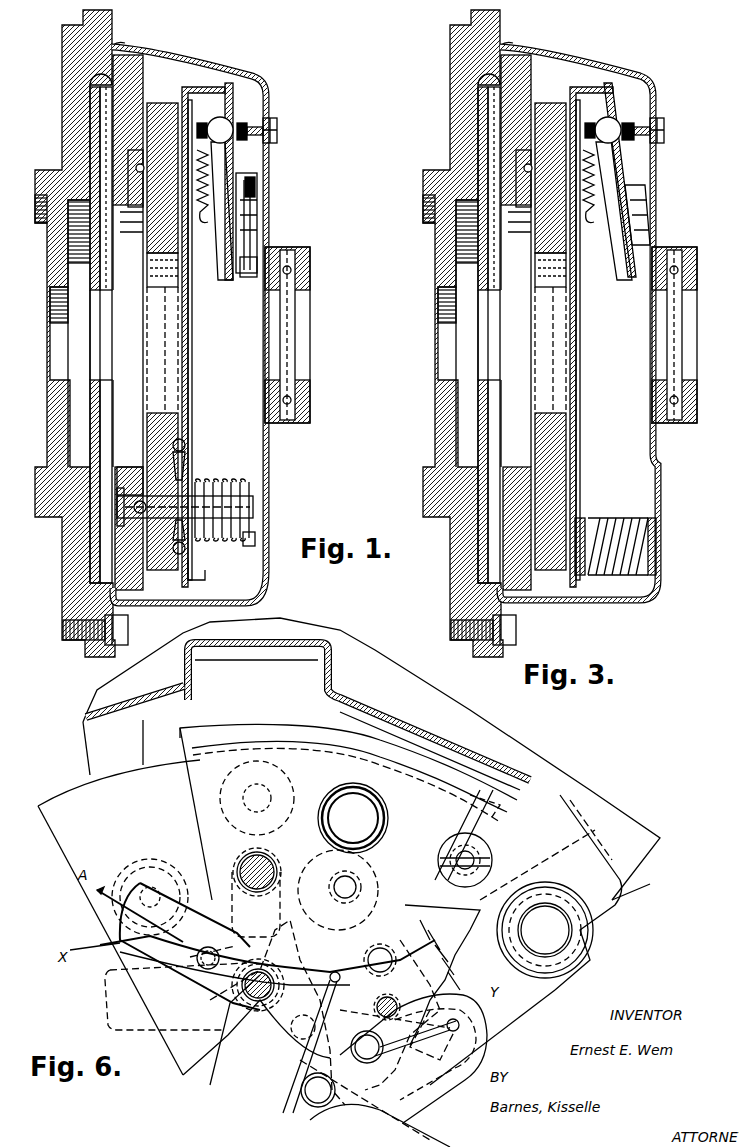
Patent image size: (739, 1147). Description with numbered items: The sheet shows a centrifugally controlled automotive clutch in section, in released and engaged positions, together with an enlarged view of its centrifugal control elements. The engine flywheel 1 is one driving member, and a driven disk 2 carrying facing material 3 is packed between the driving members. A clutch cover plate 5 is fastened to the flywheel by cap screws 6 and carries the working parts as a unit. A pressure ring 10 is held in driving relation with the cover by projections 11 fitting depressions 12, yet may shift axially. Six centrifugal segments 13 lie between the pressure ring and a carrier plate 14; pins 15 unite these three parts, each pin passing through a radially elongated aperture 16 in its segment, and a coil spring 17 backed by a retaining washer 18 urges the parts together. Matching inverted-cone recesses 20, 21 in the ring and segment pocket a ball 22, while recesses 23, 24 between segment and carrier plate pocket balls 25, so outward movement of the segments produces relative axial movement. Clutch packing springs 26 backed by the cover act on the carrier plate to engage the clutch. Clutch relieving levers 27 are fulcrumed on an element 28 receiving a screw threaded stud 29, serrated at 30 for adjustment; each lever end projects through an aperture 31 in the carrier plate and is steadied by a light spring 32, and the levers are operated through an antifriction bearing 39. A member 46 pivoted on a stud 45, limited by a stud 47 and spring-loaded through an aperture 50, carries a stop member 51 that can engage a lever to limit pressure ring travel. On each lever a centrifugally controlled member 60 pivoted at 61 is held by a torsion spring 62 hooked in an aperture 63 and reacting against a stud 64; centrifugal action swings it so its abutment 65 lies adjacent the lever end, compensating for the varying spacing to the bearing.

In FIG. 1, the flywheel 1 is at (73, 50).
In FIG. 3, the flywheel 1 is at (461, 50).
In FIG. 1, the driven disk 2 is at (100, 240).
In FIG. 3, the driven disk 2 is at (488, 240).
In FIG. 1, the facing material 3 is at (95, 106).
In FIG. 3, the facing material 3 is at (483, 106).
In FIG. 1, the clutch cover plate 5 is at (271, 596).
In FIG. 3, the clutch cover plate 5 is at (650, 598).
In FIG. 6, the clutch cover plate 5 is at (495, 740).
In FIG. 1, the cap screws 6 is at (130, 632).
In FIG. 3, the cap screws 6 is at (518, 632).
In FIG. 1, the pressure ring 10 is at (145, 75).
In FIG. 3, the pressure ring 10 is at (532, 580).
In FIG. 1, the projections 11 is at (130, 70).
In FIG. 3, the projections 11 is at (518, 70).
In FIG. 6, the projections 11 is at (305, 680).
In FIG. 6, the depressions 12 is at (303, 640).
In FIG. 1, the segments 13 is at (190, 282).
In FIG. 3, the segments 13 is at (570, 420).
In FIG. 1, the carrier plate 14 is at (196, 428).
In FIG. 3, the carrier plate 14 is at (582, 445).
In FIG. 6, the carrier plate 14 is at (608, 896).
In FIG. 1, the pins 15 is at (163, 503).
In FIG. 6, the pins 15 is at (280, 868).
In FIG. 1, the aperture 16 is at (148, 480).
In FIG. 6, the aperture 16 is at (276, 908).
In FIG. 1, the coil spring 17 is at (222, 483).
In FIG. 1, the retaining washer 18 is at (248, 547).
In FIG. 1, the recess 20 is at (136, 208).
In FIG. 3, the recess 20 is at (524, 208).
In FIG. 1, the recess 21 is at (160, 118).
In FIG. 3, the recess 21 is at (548, 118).
In FIG. 1, the ball 22 is at (150, 262).
In FIG. 3, the ball 22 is at (538, 262).
In FIG. 1, the recess 23 is at (196, 440).
In FIG. 1, the recess 24 is at (190, 412).
In FIG. 1, the balls 25 is at (197, 456).
In FIG. 3, the clutch packing springs 26 is at (605, 520).
In FIG. 6, the clutch packing springs 26 is at (588, 965).
In FIG. 1, the clutch relieving levers 27 is at (237, 175).
In FIG. 3, the clutch relieving levers 27 is at (625, 175).
In FIG. 1, the fulcrum element 28 is at (225, 120).
In FIG. 3, the fulcrum element 28 is at (615, 120).
In FIG. 1, the screw threaded stud 29 is at (278, 128).
In FIG. 3, the screw threaded stud 29 is at (665, 128).
In FIG. 6, the screw threaded stud 29 is at (485, 845).
In FIG. 1, the serrations 30 is at (257, 126).
In FIG. 3, the serrations 30 is at (645, 126).
In FIG. 1, the aperture 31 is at (238, 85).
In FIG. 3, the aperture 31 is at (620, 85).
In FIG. 1, the light spring 32 is at (203, 216).
In FIG. 3, the light spring 32 is at (590, 216).
In FIG. 1, the antifriction bearing 39 is at (276, 423).
In FIG. 3, the antifriction bearing 39 is at (665, 247).
In FIG. 6, the stud 45 is at (257, 1003).
In FIG. 6, the member 46 is at (197, 875).
In FIG. 6, the stud 47 is at (197, 965).
In FIG. 1, the aperture 50 is at (250, 235).
In FIG. 3, the aperture 50 is at (640, 200).
In FIG. 6, the aperture 50 is at (300, 1095).
In FIG. 1, the stop member 51 is at (258, 190).
In FIG. 6, the stop member 51 is at (447, 980).
In FIG. 6, the centrifugally controlled member 60 is at (480, 1052).
In FIG. 6, the pivot 61 is at (383, 1062).
In FIG. 6, the torsion spring 62 is at (430, 1042).
In FIG. 6, the aperture 63 is at (460, 1027).
In FIG. 6, the stud 64 is at (433, 1005).
In FIG. 1, the abutment 65 is at (247, 278).
In FIG. 6, the abutment 65 is at (323, 1095).